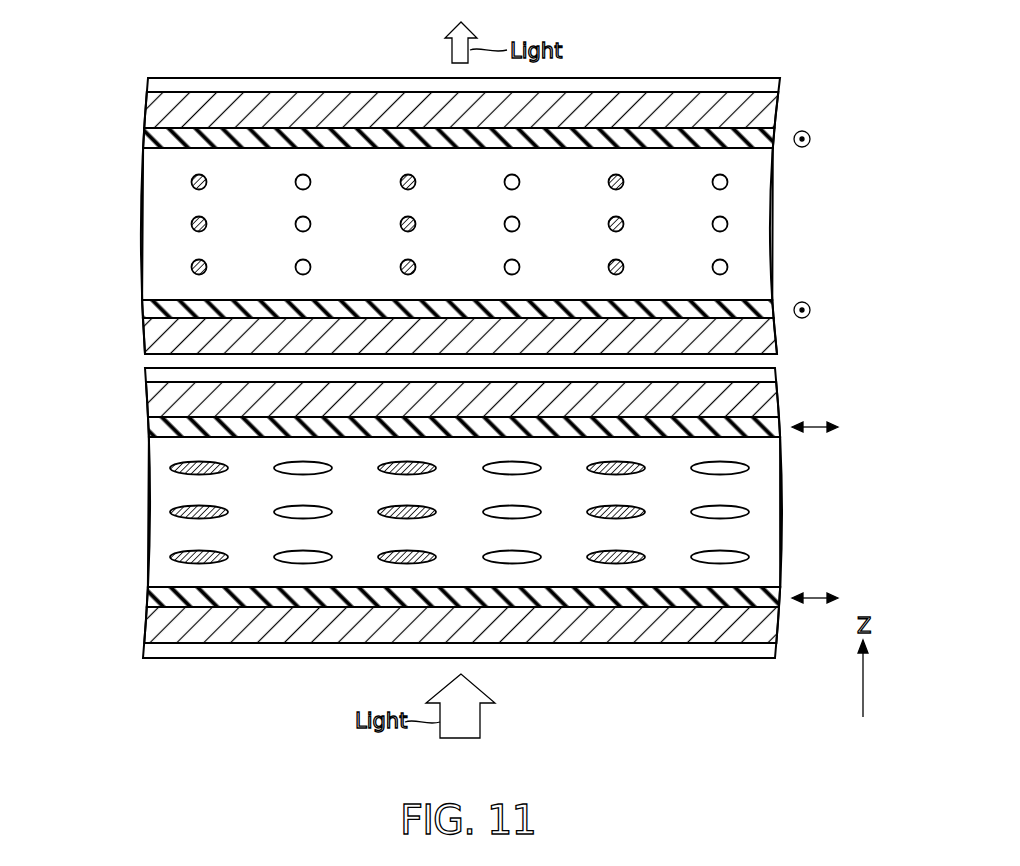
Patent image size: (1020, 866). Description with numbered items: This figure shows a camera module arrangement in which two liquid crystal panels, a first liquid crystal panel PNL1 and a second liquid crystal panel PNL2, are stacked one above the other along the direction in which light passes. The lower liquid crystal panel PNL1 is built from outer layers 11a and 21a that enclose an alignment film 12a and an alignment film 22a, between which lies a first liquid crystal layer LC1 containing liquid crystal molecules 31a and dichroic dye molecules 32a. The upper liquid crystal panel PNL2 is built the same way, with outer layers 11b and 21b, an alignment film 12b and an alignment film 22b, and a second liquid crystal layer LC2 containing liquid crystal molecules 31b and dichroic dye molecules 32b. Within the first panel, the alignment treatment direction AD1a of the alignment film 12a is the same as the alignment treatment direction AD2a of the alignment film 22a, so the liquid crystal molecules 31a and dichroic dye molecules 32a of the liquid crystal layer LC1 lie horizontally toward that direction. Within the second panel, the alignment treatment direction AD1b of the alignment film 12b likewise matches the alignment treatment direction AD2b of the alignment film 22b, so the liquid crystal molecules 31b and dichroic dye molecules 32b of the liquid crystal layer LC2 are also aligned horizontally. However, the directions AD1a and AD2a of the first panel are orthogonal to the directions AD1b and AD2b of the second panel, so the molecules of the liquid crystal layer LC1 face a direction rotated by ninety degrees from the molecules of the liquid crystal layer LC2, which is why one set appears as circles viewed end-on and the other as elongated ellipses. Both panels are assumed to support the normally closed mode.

The first liquid crystal panel PNL1 is at (780, 668).
The second liquid crystal panel PNL2 is at (141, 73).
The first substrate of first panel 11a is at (148, 626).
The first substrate of second panel 11b is at (146, 342).
The alignment film 12a is at (150, 597).
The alignment film 12b is at (145, 310).
The second substrate of first panel 21a is at (148, 398).
The second substrate of second panel 21b is at (146, 112).
The alignment film 22a is at (150, 428).
The alignment film 22b is at (145, 140).
The first liquid crystal molecules 31a is at (750, 468).
The second liquid crystal molecules 31b is at (728, 182).
The first dichroic dye molecules 32a is at (170, 557).
The second dichroic dye molecules 32b is at (192, 267).
The first liquid crystal layer LC1 is at (765, 522).
The second liquid crystal layer LC2 is at (748, 237).
The alignment treatment direction AD1a is at (815, 594).
The alignment treatment direction AD1b is at (807, 302).
The alignment treatment direction AD2a is at (815, 423).
The alignment treatment direction AD2b is at (807, 131).